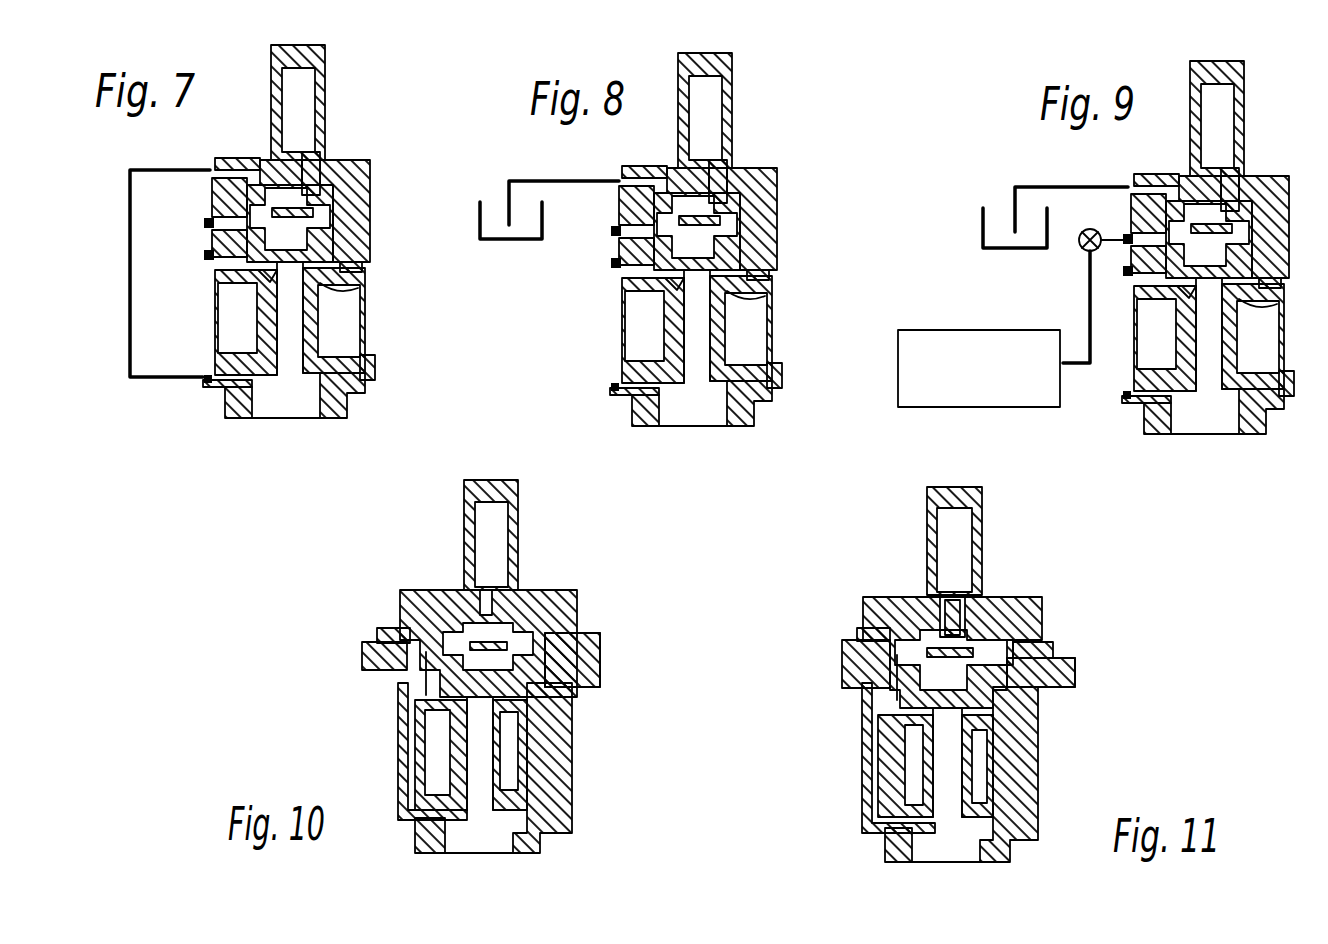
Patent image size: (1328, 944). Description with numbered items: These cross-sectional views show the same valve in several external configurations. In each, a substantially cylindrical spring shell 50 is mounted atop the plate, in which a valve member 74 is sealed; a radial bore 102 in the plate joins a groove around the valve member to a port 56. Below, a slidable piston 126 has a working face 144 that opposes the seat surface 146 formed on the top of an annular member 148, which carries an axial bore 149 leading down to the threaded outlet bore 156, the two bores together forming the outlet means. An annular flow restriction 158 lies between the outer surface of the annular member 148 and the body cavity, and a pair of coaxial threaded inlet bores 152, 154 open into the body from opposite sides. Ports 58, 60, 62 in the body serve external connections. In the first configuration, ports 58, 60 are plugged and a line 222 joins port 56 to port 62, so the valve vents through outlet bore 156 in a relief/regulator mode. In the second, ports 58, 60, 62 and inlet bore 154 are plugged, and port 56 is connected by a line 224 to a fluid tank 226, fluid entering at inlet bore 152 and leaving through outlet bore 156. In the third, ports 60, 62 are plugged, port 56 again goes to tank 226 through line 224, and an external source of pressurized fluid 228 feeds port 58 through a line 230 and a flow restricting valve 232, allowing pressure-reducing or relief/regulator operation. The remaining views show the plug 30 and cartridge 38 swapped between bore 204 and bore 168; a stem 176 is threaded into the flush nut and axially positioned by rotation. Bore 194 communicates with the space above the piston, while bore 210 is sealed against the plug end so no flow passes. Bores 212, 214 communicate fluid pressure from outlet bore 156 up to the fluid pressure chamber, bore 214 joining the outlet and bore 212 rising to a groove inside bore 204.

In FIG. 10, the plug 30 is at (612, 673).
In FIG. 11, the plug 30 is at (834, 661).
In FIG. 10, the cartridge 38 is at (350, 641).
In FIG. 11, the cartridge 38 is at (1087, 666).
In FIG. 7, the spring shell 50 is at (325, 100).
In FIG. 8, the spring shell 50 is at (733, 110).
In FIG. 9, the spring shell 50 is at (1240, 102).
In FIG. 10, the spring shell 50 is at (518, 520).
In FIG. 11, the spring shell 50 is at (983, 528).
In FIG. 7, the port 56 is at (215, 164).
In FIG. 8, the port 56 is at (639, 180).
In FIG. 9, the port 56 is at (1148, 192).
In FIG. 7, the port 58 is at (232, 222).
In FIG. 8, the port 58 is at (620, 205).
In FIG. 9, the port 58 is at (1125, 240).
In FIG. 11, the port 58 is at (1025, 738).
In FIG. 7, the port 60 is at (212, 243).
In FIG. 8, the port 60 is at (619, 287).
In FIG. 9, the port 60 is at (1133, 283).
In FIG. 7, the port 62 is at (212, 380).
In FIG. 8, the port 62 is at (628, 395).
In FIG. 9, the port 62 is at (1135, 415).
In FIG. 7, the valve member 74 is at (312, 165).
In FIG. 8, the valve member 74 is at (720, 181).
In FIG. 9, the valve member 74 is at (1222, 190).
In FIG. 11, the valve member 74 is at (975, 597).
In FIG. 7, the radial bore 102 is at (250, 178).
In FIG. 8, the radial bore 102 is at (658, 194).
In FIG. 9, the radial bore 102 is at (1165, 210).
In FIG. 7, the piston 126 is at (370, 205).
In FIG. 8, the piston 126 is at (777, 222).
In FIG. 9, the piston 126 is at (1273, 200).
In FIG. 11, the piston 126 is at (890, 700).
In FIG. 7, the working face 144 is at (340, 292).
In FIG. 8, the working face 144 is at (778, 304).
In FIG. 9, the working face 144 is at (1148, 345).
In FIG. 7, the seat surface 146 is at (372, 240).
In FIG. 8, the seat surface 146 is at (778, 258).
In FIG. 9, the seat surface 146 is at (1246, 312).
In FIG. 7, the annular member 148 is at (318, 318).
In FIG. 8, the annular member 148 is at (726, 316).
In FIG. 9, the annular member 148 is at (1240, 385).
In FIG. 11, the annular member 148 is at (972, 738).
In FIG. 7, the axial bore 149 is at (292, 333).
In FIG. 8, the axial bore 149 is at (702, 342).
In FIG. 9, the axial bore 149 is at (1200, 380).
In FIG. 11, the axial bore 149 is at (950, 770).
In FIG. 7, the inlet bore 152 is at (228, 332).
In FIG. 8, the inlet bore 152 is at (635, 328).
In FIG. 9, the inlet bore 152 is at (1148, 370).
In FIG. 7, the inlet bore 154 is at (337, 357).
In FIG. 8, the inlet bore 154 is at (752, 370).
In FIG. 9, the inlet bore 154 is at (1262, 400).
In FIG. 7, the outlet bore 156 is at (305, 410).
In FIG. 8, the outlet bore 156 is at (715, 426).
In FIG. 9, the outlet bore 156 is at (1222, 420).
In FIG. 10, the outlet bore 156 is at (493, 840).
In FIG. 11, the outlet bore 156 is at (970, 850).
In FIG. 7, the flow restriction 158 is at (260, 283).
In FIG. 8, the flow restriction 158 is at (642, 292).
In FIG. 9, the flow restriction 158 is at (1150, 310).
In FIG. 10, the bore 168 is at (600, 645).
In FIG. 11, the bore 168 is at (1045, 650).
In FIG. 11, the stem 176 is at (1078, 672).
In FIG. 10, the bore 194 is at (560, 608).
In FIG. 10, the bore 204 is at (377, 635).
In FIG. 11, the bore 204 is at (842, 650).
In FIG. 10, the bore 210 is at (428, 660).
In FIG. 11, the bore 210 is at (897, 665).
In FIG. 10, the bore 212 is at (400, 735).
In FIG. 11, the bore 212 is at (863, 782).
In FIG. 10, the bore 214 is at (425, 825).
In FIG. 11, the bore 214 is at (888, 828).
In FIG. 7, the line 222 is at (130, 240).
In FIG. 8, the line 224 is at (565, 182).
In FIG. 9, the line 224 is at (1065, 187).
In FIG. 8, the fluid tank 226 is at (545, 220).
In FIG. 9, the fluid tank 226 is at (980, 240).
In FIG. 9, the source of pressurized fluid 228 is at (928, 330).
In FIG. 9, the line 230 is at (1090, 370).
In FIG. 9, the flow restricting valve 232 is at (1080, 248).